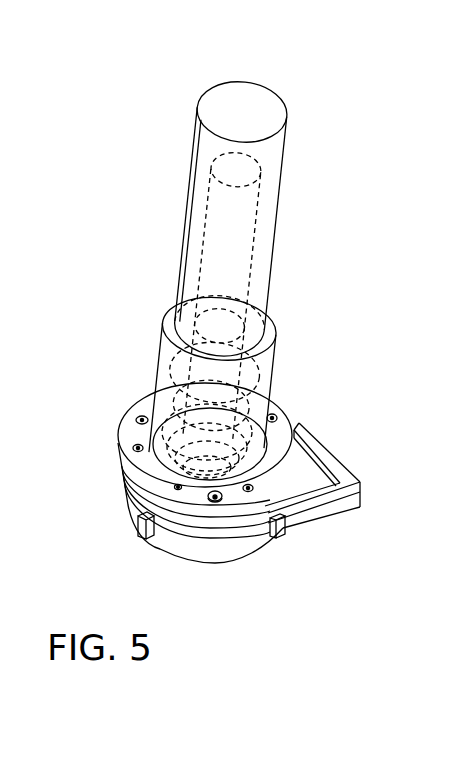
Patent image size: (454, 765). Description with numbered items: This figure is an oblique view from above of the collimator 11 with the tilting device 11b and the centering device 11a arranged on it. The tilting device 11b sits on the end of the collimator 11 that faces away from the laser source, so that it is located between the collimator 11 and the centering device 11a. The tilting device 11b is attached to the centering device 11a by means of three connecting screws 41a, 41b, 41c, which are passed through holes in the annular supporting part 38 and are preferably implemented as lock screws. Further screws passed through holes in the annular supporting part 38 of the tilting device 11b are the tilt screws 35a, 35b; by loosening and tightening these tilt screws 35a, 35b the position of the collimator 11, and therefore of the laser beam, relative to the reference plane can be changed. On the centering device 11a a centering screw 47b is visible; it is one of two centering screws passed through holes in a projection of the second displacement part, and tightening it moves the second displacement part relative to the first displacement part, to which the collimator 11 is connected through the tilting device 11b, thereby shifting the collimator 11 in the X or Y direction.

The collimator 11 is at (203, 248).
The centering device 11a is at (345, 530).
The tilting device 11b is at (290, 402).
The tilt screw 35a is at (133, 449).
The tilt screw 35b is at (249, 491).
The annular supporting part 38 is at (178, 490).
The connecting screw 41a is at (136, 421).
The connecting screw 41b is at (215, 500).
The connecting screw 41c is at (278, 417).
The centering screw 47b is at (321, 514).